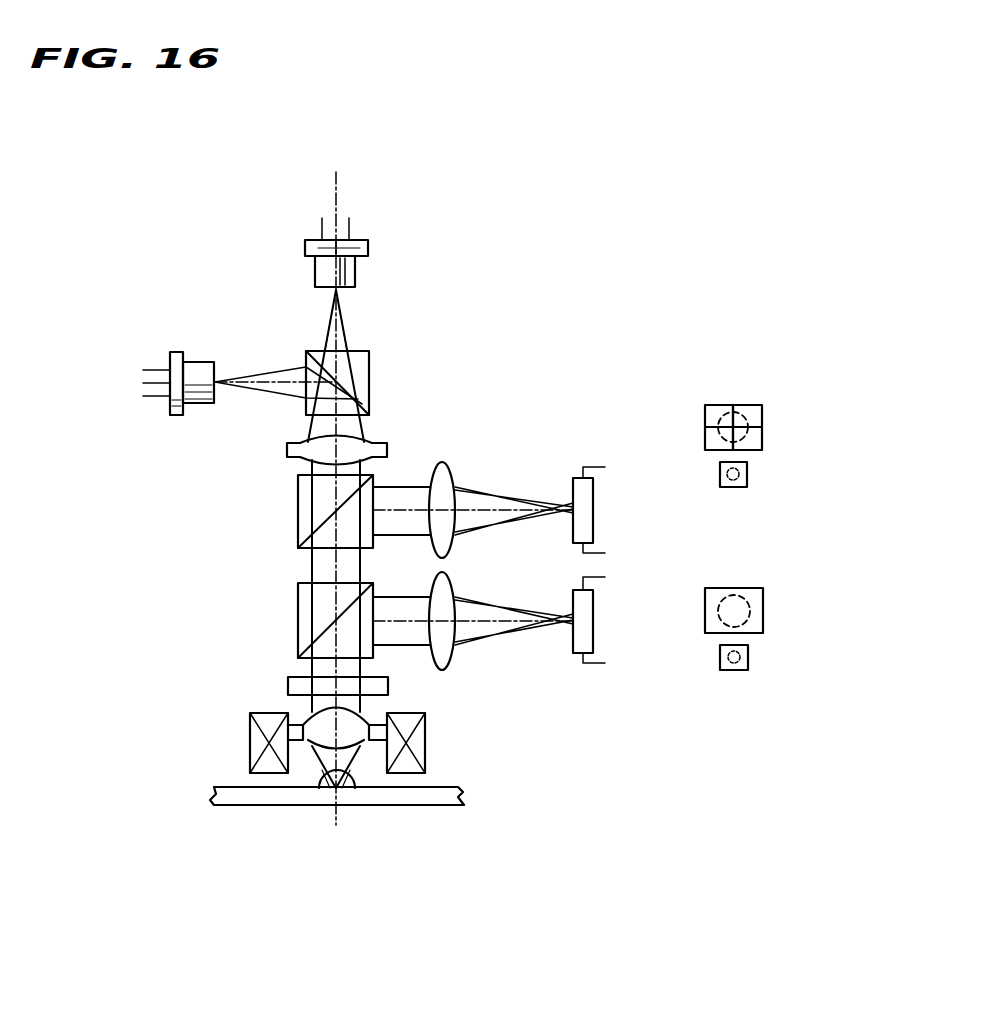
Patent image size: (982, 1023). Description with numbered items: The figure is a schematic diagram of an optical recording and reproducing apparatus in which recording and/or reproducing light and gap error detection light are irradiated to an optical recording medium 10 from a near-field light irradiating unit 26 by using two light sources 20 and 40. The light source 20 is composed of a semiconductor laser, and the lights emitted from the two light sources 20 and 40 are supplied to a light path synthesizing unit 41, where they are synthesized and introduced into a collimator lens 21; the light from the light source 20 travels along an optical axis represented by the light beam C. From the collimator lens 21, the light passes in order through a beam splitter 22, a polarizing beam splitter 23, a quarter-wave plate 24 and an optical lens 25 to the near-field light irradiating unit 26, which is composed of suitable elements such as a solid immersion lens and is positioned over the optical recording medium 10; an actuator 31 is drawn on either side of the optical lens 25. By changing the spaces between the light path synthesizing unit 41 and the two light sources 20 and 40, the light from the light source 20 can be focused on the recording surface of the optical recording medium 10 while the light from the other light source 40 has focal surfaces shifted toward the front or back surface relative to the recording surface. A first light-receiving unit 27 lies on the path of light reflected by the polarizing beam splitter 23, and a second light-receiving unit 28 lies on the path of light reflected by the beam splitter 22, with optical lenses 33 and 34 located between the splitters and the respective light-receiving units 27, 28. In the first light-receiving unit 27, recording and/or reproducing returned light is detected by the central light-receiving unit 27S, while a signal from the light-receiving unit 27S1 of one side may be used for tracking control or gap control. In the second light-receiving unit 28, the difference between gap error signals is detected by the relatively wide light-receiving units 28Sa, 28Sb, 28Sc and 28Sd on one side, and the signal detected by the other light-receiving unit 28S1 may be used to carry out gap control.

The optical recording medium 10 is at (450, 808).
The light source 20 is at (380, 262).
The collimator lens 21 is at (274, 452).
The beam splitter 22 is at (292, 528).
The polarizing beam splitter 23 is at (292, 598).
The quarter-wave plate 24 is at (393, 685).
The optical lens 25 is at (302, 710).
The near-field light irradiating unit 26 is at (370, 776).
The first light-receiving unit 27 is at (583, 668).
The second light-receiving unit 28 is at (568, 462).
The actuator 31 is at (427, 750).
The optical lens 33 is at (452, 464).
The optical lens 34 is at (452, 577).
The light source 40 is at (181, 342).
The light path synthesizing unit 41 is at (372, 386).
The light beam C is at (338, 318).
The light-receiving unit 28Sa is at (718, 405).
The light-receiving unit 28Sb is at (705, 433).
The light-receiving unit 28Sc is at (762, 440).
The light-receiving unit 28Sd is at (762, 412).
The light-receiving unit 28S1 is at (752, 475).
The light-receiving unit 27S1 is at (777, 610).
The central light-receiving unit 27S is at (753, 660).